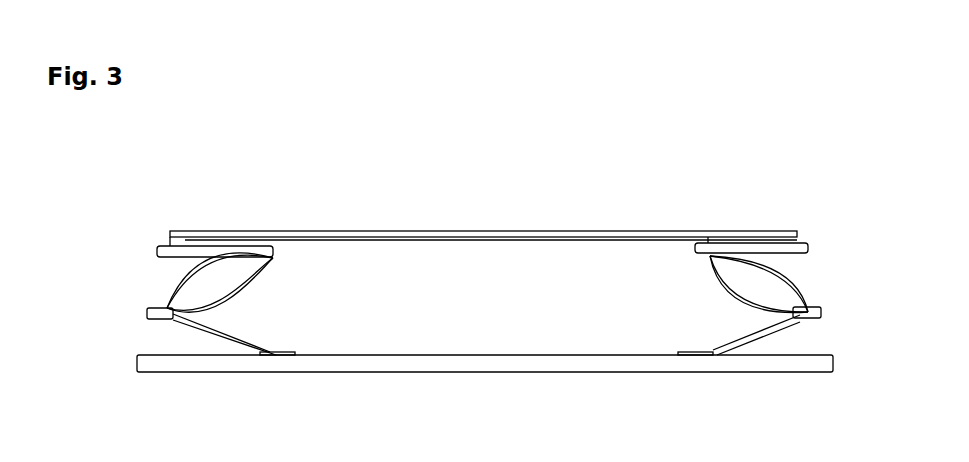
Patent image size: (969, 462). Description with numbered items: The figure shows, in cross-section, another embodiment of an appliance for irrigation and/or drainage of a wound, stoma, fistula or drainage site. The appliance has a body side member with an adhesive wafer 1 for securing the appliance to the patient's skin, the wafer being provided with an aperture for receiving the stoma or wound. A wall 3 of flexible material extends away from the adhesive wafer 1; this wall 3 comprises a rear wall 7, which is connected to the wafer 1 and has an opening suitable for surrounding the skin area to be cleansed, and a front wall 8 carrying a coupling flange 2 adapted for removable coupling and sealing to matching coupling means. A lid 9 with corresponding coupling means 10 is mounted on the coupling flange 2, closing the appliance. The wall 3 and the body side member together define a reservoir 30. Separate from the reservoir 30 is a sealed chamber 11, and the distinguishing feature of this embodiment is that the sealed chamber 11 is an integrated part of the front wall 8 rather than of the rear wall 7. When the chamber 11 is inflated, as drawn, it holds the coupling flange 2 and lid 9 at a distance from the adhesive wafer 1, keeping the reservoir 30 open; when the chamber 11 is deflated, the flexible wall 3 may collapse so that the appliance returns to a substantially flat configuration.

The adhesive wafer 1 is at (210, 362).
The coupling flange 2 is at (157, 252).
The wall 3 is at (173, 325).
The rear wall 7 is at (777, 328).
The front wall 8 is at (783, 278).
The lid 9 is at (660, 233).
The coupling means 10 is at (790, 237).
The sealed chamber 11 is at (753, 280).
The reservoir 30 is at (265, 305).